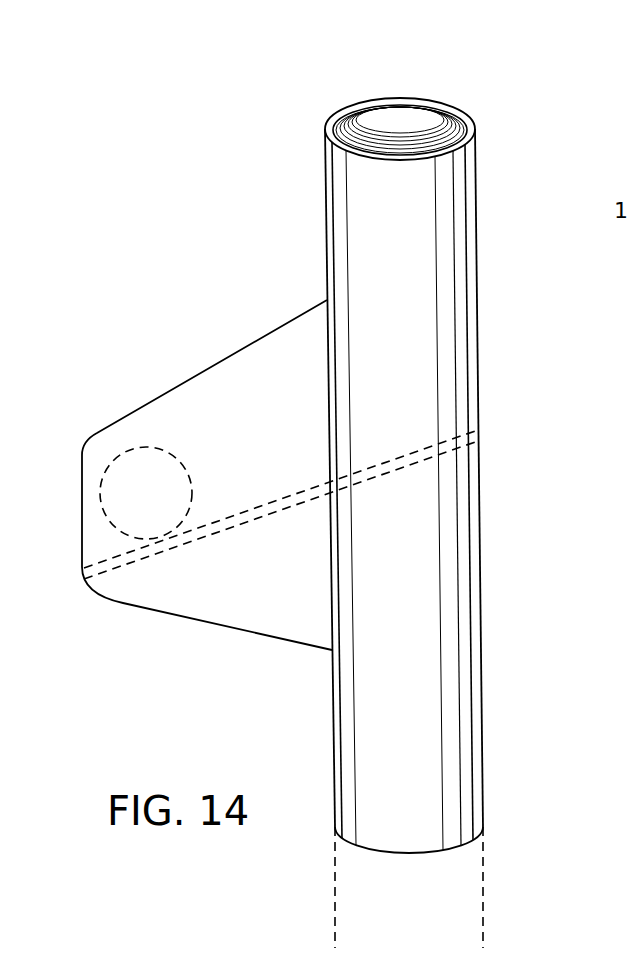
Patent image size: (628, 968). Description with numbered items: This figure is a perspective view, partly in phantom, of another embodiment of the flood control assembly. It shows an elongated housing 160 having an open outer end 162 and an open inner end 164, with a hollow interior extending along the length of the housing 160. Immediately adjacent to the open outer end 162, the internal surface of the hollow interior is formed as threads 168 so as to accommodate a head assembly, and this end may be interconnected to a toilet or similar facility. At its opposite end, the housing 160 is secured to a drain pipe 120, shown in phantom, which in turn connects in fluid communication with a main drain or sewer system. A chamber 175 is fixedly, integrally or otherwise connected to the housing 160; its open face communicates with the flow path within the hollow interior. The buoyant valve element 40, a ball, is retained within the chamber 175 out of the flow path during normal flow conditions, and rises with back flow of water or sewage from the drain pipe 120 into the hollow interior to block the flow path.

The elongated housing 160 is at (508, 377).
The open outer end 162 is at (403, 100).
The internal threads 168 is at (440, 118).
The open inner end 164 is at (464, 840).
The drain pipe 120 is at (333, 907).
The chamber 175 is at (213, 360).
The valve element 40 is at (127, 468).